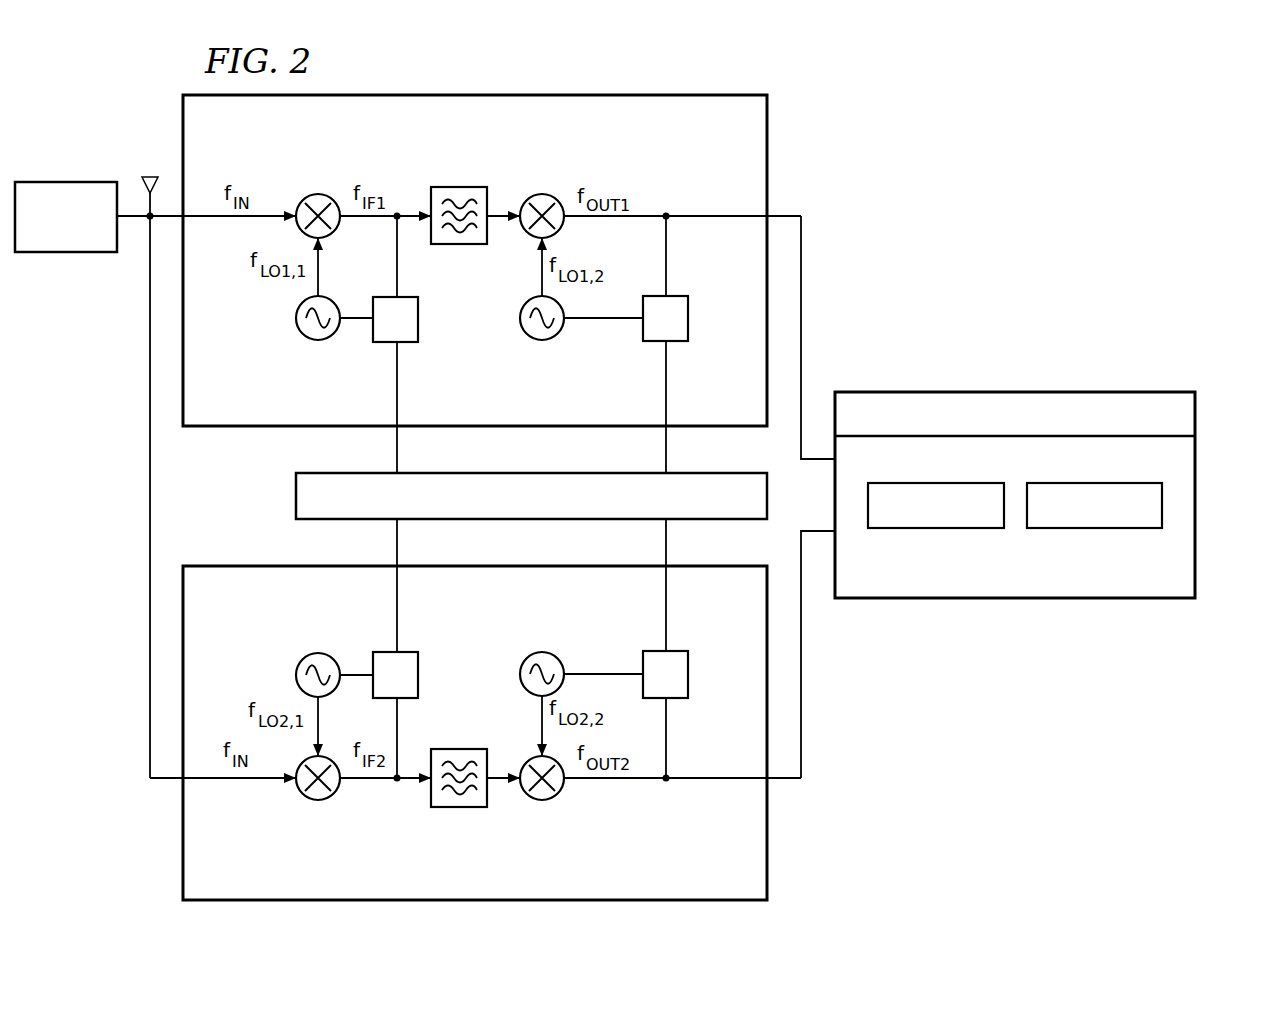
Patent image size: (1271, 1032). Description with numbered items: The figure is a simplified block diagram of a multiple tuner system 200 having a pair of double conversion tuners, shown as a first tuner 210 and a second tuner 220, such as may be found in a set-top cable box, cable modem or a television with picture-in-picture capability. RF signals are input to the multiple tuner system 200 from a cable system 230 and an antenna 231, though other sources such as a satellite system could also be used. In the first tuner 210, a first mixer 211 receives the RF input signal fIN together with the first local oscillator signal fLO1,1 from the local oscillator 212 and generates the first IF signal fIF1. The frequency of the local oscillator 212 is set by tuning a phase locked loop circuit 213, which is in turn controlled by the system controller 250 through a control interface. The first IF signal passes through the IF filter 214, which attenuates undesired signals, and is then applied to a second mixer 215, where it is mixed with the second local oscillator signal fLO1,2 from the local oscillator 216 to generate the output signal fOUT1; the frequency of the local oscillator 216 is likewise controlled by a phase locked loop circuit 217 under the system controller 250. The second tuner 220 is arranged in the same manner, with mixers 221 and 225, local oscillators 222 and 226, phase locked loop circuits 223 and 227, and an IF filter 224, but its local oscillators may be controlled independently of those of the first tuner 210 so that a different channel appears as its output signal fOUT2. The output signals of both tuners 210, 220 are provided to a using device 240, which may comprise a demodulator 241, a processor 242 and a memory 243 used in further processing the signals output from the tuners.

The multiple tuner system 200 is at (1036, 162).
The tuner 210 is at (777, 145).
The mixer 211 is at (305, 200).
The local oscillator 212 is at (308, 336).
The phase locked loop circuit 213 is at (420, 330).
The IF filter 214 is at (460, 187).
The mixer 215 is at (552, 198).
The local oscillator 216 is at (552, 340).
The phase locked loop circuit 217 is at (672, 342).
The tuner 220 is at (777, 848).
The mixer 221 is at (305, 797).
The local oscillator 222 is at (305, 656).
The phase locked loop circuit 223 is at (420, 663).
The IF filter 224 is at (458, 807).
The mixer 225 is at (550, 797).
The local oscillator 226 is at (553, 656).
The phase locked loop circuit 227 is at (680, 651).
The cable system 230 is at (66, 182).
The antenna 231 is at (150, 177).
The using device 240 is at (1195, 414).
The demodulator 241 is at (1195, 538).
The processor 242 is at (934, 529).
The memory 243 is at (1093, 529).
The system controller 250 is at (296, 496).